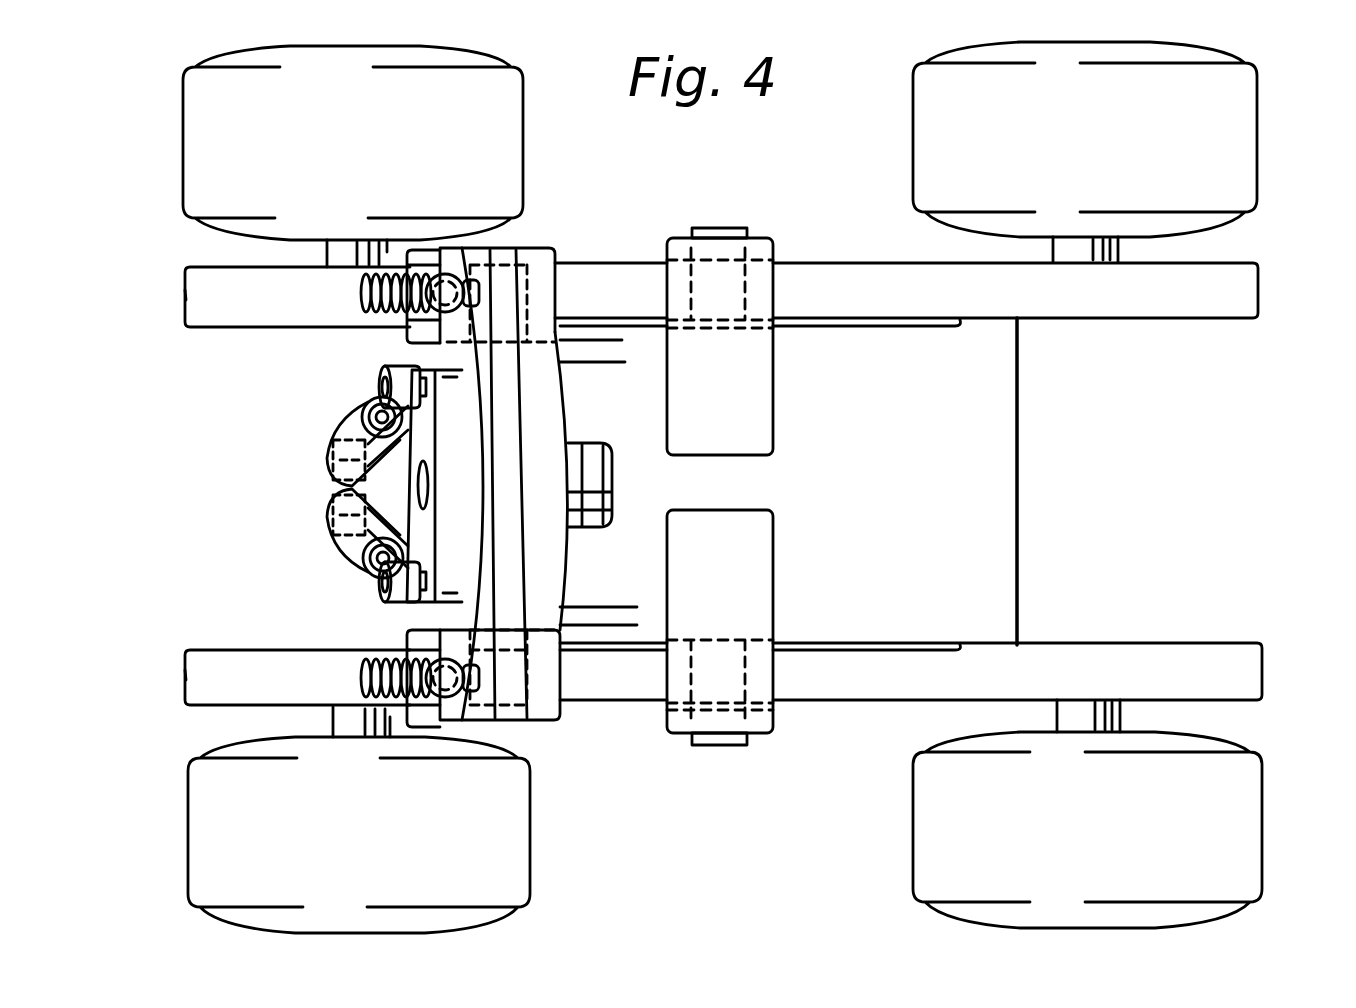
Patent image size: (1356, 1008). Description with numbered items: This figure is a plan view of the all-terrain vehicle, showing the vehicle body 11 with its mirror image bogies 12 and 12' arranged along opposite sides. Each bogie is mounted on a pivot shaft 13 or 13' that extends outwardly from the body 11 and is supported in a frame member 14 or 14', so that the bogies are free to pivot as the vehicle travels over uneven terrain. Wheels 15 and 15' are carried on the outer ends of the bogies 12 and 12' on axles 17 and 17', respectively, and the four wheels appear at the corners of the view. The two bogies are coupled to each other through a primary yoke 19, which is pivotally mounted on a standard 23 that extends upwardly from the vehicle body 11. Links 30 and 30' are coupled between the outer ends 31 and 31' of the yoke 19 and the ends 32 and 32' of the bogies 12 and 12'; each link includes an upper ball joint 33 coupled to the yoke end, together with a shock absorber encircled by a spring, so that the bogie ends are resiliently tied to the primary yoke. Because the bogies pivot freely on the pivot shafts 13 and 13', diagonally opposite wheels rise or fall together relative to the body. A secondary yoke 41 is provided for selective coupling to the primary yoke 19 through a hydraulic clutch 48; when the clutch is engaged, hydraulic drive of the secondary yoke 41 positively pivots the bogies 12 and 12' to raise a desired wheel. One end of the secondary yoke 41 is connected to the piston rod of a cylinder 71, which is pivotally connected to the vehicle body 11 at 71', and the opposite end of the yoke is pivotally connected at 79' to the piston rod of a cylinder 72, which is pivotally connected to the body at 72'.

The vehicle body 11 is at (1010, 500).
The bogie 12 is at (723, 653).
The bogie 12' is at (721, 304).
The pivot shaft 13 is at (724, 768).
The pivot shaft 13' is at (726, 201).
The frame member 14 is at (765, 621).
The frame member 14' is at (762, 346).
The wheel 15 is at (713, 832).
The wheel 15' is at (713, 141).
The axle 17 is at (708, 762).
The axle 17' is at (694, 212).
The primary yoke 19 is at (512, 412).
The standard 23 is at (547, 562).
The link 30 is at (381, 678).
The link 30' is at (380, 293).
The outer end of primary yoke 31 is at (511, 709).
The outer end of primary yoke 31' is at (515, 270).
The bogie end 32 is at (215, 639).
The bogie end 32' is at (227, 329).
The upper ball joint 33 is at (447, 268).
The secondary yoke 41 is at (462, 395).
The hydraulic clutch 48 is at (597, 463).
The cylinder 71 is at (335, 434).
The pivotal connection 71' is at (342, 406).
The cylinder 72 is at (340, 533).
The pivotal connection 72' is at (311, 515).
The pivotal connection 79' is at (363, 586).